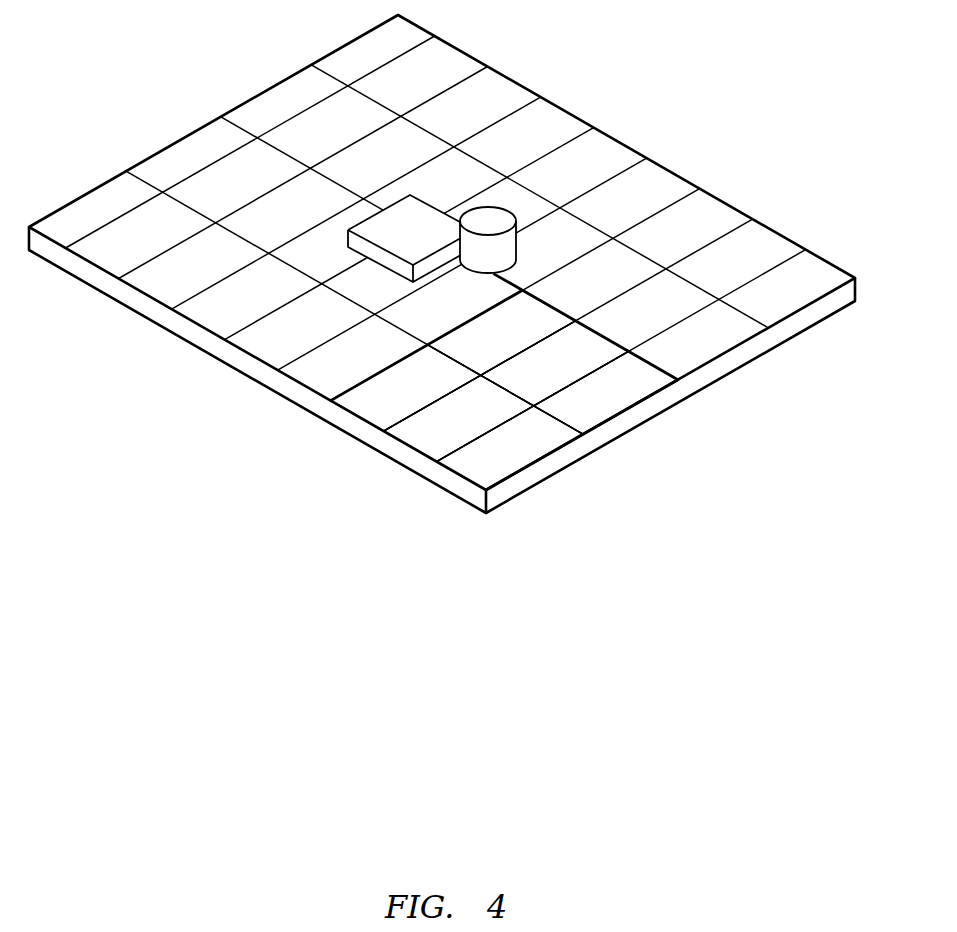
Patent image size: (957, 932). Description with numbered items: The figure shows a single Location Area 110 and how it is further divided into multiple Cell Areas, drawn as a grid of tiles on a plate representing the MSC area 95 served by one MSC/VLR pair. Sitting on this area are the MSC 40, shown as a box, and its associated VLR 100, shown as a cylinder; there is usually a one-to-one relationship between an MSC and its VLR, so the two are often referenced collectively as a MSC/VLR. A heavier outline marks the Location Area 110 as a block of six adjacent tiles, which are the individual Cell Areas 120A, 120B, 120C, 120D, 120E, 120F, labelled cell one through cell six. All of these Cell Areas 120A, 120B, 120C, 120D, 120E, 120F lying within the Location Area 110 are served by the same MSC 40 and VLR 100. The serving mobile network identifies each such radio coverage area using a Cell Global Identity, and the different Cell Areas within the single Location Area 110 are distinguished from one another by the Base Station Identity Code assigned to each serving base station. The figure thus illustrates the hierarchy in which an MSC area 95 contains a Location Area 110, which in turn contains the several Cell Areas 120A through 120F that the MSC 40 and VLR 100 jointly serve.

The MSC area 95 is at (145, 159).
The MSC 40 is at (432, 222).
The VLR 100 is at (488, 212).
The Location Area 110 is at (375, 410).
The Cell Area 120A is at (531, 305).
The Cell Area 120B is at (581, 336).
The Cell Area 120C is at (634, 365).
The Cell Area 120D is at (475, 472).
The Cell Area 120E is at (425, 440).
The Cell Area 120F is at (375, 412).